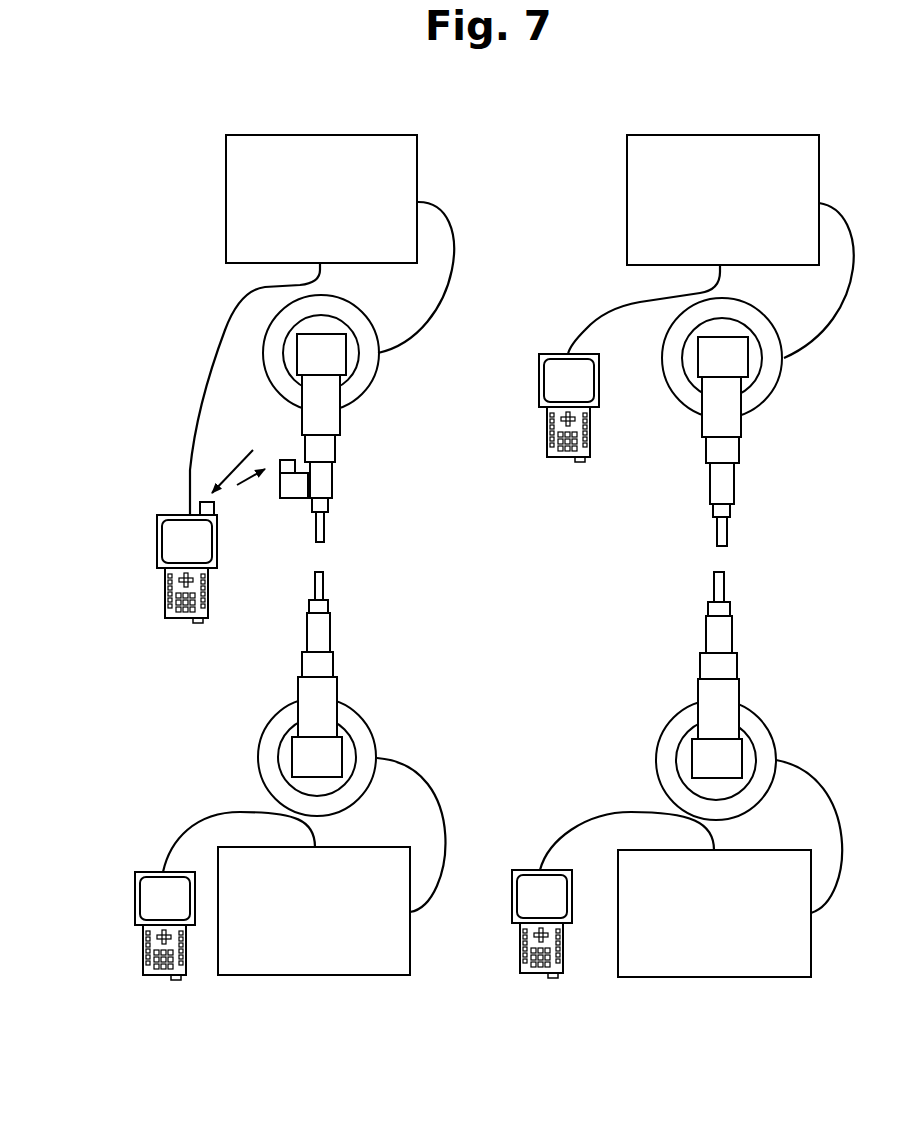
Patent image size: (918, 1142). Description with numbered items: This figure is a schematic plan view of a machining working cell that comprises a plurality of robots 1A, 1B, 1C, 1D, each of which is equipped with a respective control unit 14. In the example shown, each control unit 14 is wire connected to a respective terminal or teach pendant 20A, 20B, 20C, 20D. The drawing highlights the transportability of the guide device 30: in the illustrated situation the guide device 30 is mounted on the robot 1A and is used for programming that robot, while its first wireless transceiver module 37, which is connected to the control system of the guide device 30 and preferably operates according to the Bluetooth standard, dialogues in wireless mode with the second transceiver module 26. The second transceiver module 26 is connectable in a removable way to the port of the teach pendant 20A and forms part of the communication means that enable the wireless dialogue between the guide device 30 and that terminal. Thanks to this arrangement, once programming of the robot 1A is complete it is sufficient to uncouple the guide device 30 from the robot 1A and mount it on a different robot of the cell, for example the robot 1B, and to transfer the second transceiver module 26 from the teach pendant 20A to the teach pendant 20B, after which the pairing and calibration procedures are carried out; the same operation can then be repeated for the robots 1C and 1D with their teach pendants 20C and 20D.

The control unit 14 is at (518, 556).
The robot 1A is at (388, 441).
The robot 1B is at (790, 448).
The robot 1C is at (437, 726).
The robot 1D is at (633, 729).
The teach pendant 20A is at (192, 626).
The teach pendant 20B is at (577, 464).
The teach pendant 20C is at (195, 980).
The teach pendant 20D is at (563, 984).
The second transceiver module 26 is at (208, 502).
The guide device 30 is at (290, 505).
The first wireless transceiver module 37 is at (287, 460).